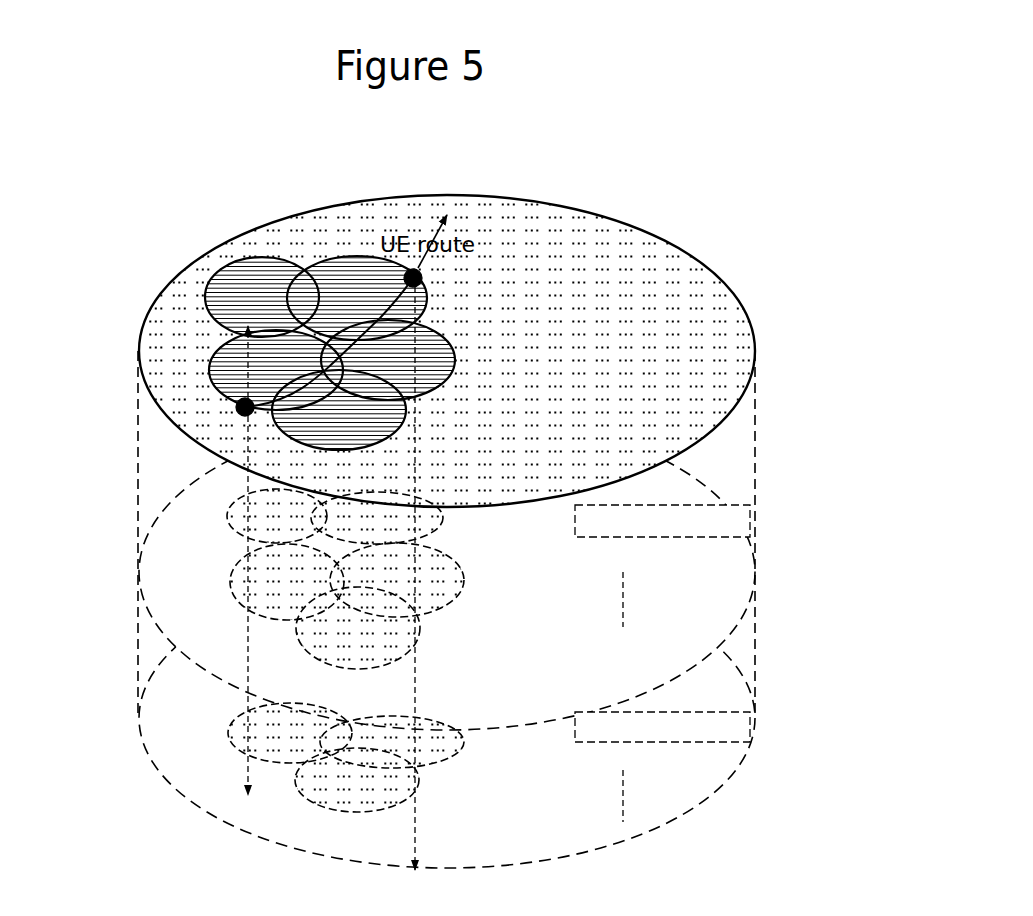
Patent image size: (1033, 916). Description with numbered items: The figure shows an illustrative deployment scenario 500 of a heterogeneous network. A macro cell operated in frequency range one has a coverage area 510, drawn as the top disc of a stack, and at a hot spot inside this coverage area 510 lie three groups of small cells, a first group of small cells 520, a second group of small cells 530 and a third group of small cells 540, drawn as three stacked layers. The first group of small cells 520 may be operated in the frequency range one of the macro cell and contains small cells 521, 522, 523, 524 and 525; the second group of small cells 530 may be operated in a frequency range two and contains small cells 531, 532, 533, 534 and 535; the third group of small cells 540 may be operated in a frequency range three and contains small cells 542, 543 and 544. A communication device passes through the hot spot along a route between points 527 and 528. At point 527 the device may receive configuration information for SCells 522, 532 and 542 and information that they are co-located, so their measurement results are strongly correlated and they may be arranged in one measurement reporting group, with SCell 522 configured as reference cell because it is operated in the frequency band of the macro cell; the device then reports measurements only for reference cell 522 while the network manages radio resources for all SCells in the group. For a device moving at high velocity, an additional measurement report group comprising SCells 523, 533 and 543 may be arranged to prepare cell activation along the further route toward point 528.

The wireless network with stacked macro cells 500 is at (152, 200).
The coverage area 510 is at (758, 349).
The first group of small cells 520 is at (356, 372).
The small cell of group cell 520 521 is at (262, 297).
The SCell 522 is at (276, 370).
The SCell 523 is at (339, 410).
The small cell of group cell 520 524 is at (388, 360).
The small cell of group cell 520 525 is at (357, 298).
The point 527 is at (236, 409).
The point 528 is at (442, 286).
The second group of small cells 530 is at (374, 599).
The small cell of group cell 530 531 is at (277, 516).
The SCell 532 is at (287, 582).
The SCell 533 is at (358, 628).
The small cell of group cell 530 534 is at (397, 580).
The small cell of group cell 530 535 is at (377, 518).
The third group of small cells 540 is at (388, 780).
The SCell 542 is at (290, 733).
The SCell 543 is at (357, 780).
The small cell of group cell 540 544 is at (392, 742).